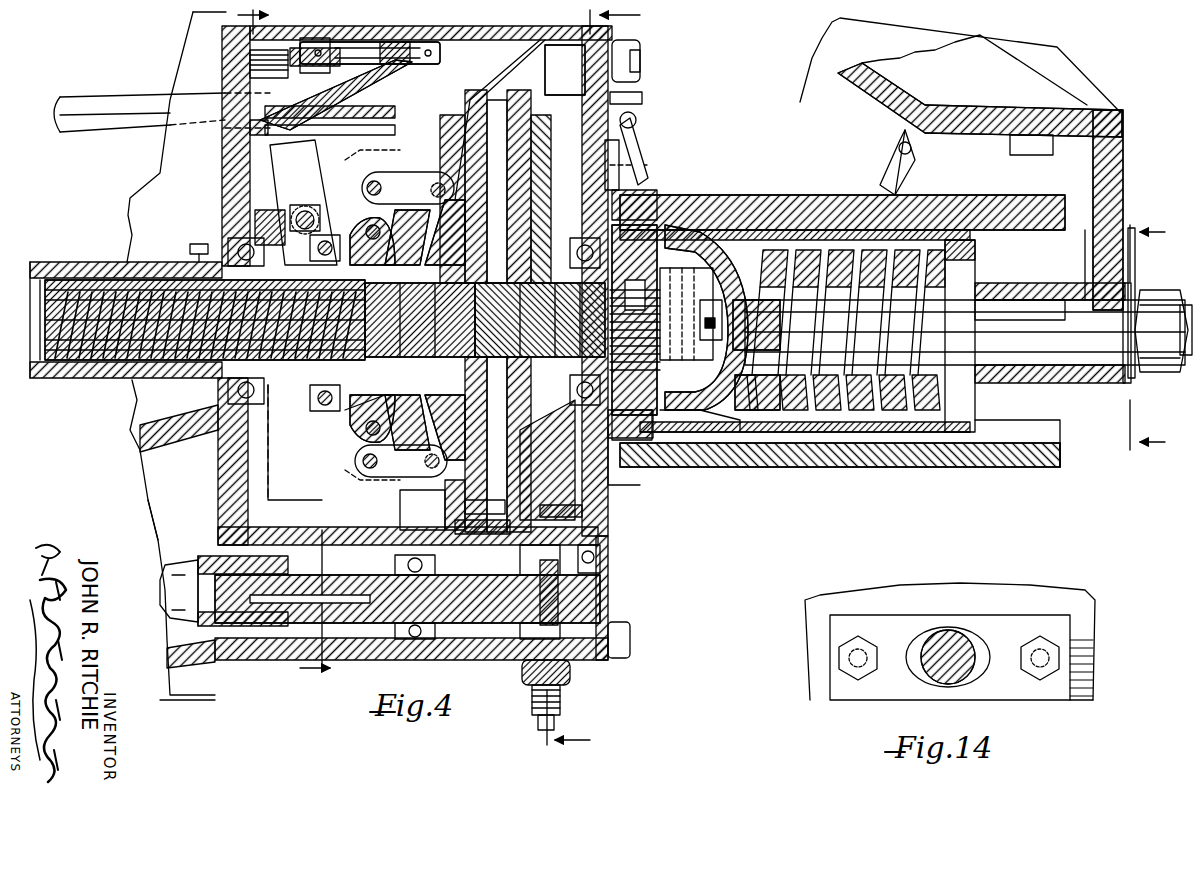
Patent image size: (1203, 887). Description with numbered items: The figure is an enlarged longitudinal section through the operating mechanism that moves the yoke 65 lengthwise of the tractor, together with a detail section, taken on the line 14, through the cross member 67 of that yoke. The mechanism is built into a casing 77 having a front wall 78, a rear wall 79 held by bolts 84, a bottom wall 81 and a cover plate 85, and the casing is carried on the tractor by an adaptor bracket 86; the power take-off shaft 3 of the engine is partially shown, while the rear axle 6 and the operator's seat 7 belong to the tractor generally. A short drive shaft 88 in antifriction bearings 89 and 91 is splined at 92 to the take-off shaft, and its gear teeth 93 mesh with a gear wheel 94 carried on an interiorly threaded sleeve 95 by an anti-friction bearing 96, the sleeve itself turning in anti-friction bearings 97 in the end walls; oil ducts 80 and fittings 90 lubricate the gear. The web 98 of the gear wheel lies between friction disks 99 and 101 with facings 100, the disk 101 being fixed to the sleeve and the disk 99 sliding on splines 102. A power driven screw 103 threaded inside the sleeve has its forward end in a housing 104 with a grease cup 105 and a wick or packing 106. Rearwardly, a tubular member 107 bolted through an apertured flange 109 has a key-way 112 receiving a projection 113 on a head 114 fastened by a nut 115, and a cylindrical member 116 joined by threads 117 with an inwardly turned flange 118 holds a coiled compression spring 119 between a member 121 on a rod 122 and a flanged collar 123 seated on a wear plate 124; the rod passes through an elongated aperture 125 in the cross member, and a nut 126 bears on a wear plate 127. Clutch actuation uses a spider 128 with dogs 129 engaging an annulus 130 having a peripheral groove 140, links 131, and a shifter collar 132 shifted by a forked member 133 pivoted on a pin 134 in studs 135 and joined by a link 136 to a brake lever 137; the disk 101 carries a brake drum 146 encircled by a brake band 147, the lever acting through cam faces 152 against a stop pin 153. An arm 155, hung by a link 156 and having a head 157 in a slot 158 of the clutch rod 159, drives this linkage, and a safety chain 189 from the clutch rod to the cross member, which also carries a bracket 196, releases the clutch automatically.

In FIG. 4, the power take-off shaft 3 is at (172, 586).
In FIG. 4, the rear axle 6 is at (294, 343).
In FIG. 4, the operator's seat 7 is at (593, 379).
In FIG. 4, the section line 14 is at (1141, 340).
In FIG. 4, the yoke 65 is at (1130, 210).
In FIG. 14, the yoke 65 is at (1028, 578).
In FIG. 4, the cross member 67 is at (1124, 176).
In FIG. 14, the cross member 67 is at (1065, 584).
In FIG. 4, the casing 77 is at (278, 668).
In FIG. 4, the front wall 78 is at (216, 465).
In FIG. 4, the rear wall 79 is at (600, 530).
In FIG. 4, the oil ducts 80 is at (492, 148).
In FIG. 4, the bottom wall 81 is at (483, 660).
In FIG. 4, the bolts 84 is at (640, 62).
In FIG. 4, the cover plate 85 is at (385, 38).
In FIG. 4, the adaptor bracket 86 is at (132, 196).
In FIG. 4, the drive shaft 88 is at (365, 618).
In FIG. 4, the antifriction bearing 89 is at (420, 640).
In FIG. 4, the fittings 90 is at (565, 70).
In FIG. 4, the antifriction bearing 91 is at (600, 556).
In FIG. 4, the spline 92 is at (260, 628).
In FIG. 4, the gear teeth 93 is at (528, 623).
In FIG. 4, the gear wheel 94 is at (465, 520).
In FIG. 4, the interiorly threaded sleeve 95 is at (288, 382).
In FIG. 4, the anti-friction bearing 96 is at (535, 311).
In FIG. 4, the anti-friction bearings 97 is at (232, 390).
In FIG. 4, the web 98 is at (470, 540).
In FIG. 4, the friction disk 99 is at (440, 506).
In FIG. 4, the facings 100 is at (470, 128).
In FIG. 4, the friction disk 101 is at (540, 128).
In FIG. 4, the splines 102 is at (420, 320).
In FIG. 4, the power driven screw 103 is at (110, 362).
In FIG. 4, the housing 104 is at (88, 262).
In FIG. 4, the grease cup 105 is at (190, 248).
In FIG. 4, the wick or packing 106 is at (55, 378).
In FIG. 4, the tubular member 107 is at (870, 468).
In FIG. 4, the apertured flange 109 is at (615, 482).
In FIG. 4, the key-way 112 is at (1050, 445).
In FIG. 4, the projection 113 is at (645, 442).
In FIG. 4, the head 114 is at (682, 440).
In FIG. 4, the nut 115 is at (696, 290).
In FIG. 4, the cylindrical member 116 is at (845, 430).
In FIG. 4, the threads 117 is at (710, 450).
In FIG. 4, the inwardly turned flange 118 is at (968, 258).
In FIG. 4, the coiled compression spring 119 is at (903, 412).
In FIG. 4, the member 121 is at (735, 255).
In FIG. 4, the rod 122 is at (1032, 340).
In FIG. 14, the rod 122 is at (950, 640).
In FIG. 4, the flanged collar 123 is at (1028, 296).
In FIG. 4, the wear plate 124 is at (1085, 292).
In FIG. 4, the elongated aperture 125 is at (1127, 292).
In FIG. 14, the elongated aperture 125 is at (980, 675).
In FIG. 4, the nut 126 is at (1160, 296).
In FIG. 4, the wear plate 127 is at (1130, 380).
In FIG. 14, the wear plate 127 is at (847, 690).
In FIG. 4, the spider 128 is at (385, 430).
In FIG. 4, the dogs 129 is at (378, 326).
In FIG. 4, the annulus 130 is at (405, 210).
In FIG. 4, the links 131 is at (362, 190).
In FIG. 4, the shifter collar 132 is at (348, 418).
In FIG. 4, the forked member 133 is at (250, 78).
In FIG. 4, the pin 134 is at (305, 208).
In FIG. 4, the studs 135 is at (262, 214).
In FIG. 4, the link 136 is at (470, 50).
In FIG. 4, the brake lever 137 is at (525, 58).
In FIG. 4, the peripheral groove 140 is at (448, 495).
In FIG. 4, the brake drum 146 is at (620, 150).
In FIG. 4, the brake band 147 is at (585, 520).
In FIG. 4, the cam faces 152 is at (649, 164).
In FIG. 4, the stop pin 153 is at (650, 190).
In FIG. 4, the arm 155 is at (400, 56).
In FIG. 4, the link 156 is at (380, 66).
In FIG. 4, the head 157 is at (262, 106).
In FIG. 4, the slot 158 is at (262, 132).
In FIG. 4, the clutch rod 159 is at (95, 103).
In FIG. 4, the safety chain 189 is at (648, 140).
In FIG. 4, the bracket 196 is at (1040, 85).